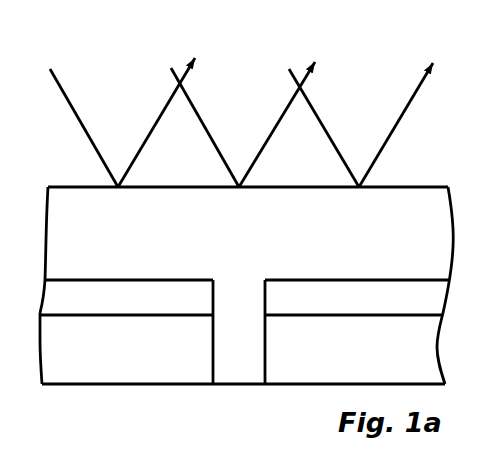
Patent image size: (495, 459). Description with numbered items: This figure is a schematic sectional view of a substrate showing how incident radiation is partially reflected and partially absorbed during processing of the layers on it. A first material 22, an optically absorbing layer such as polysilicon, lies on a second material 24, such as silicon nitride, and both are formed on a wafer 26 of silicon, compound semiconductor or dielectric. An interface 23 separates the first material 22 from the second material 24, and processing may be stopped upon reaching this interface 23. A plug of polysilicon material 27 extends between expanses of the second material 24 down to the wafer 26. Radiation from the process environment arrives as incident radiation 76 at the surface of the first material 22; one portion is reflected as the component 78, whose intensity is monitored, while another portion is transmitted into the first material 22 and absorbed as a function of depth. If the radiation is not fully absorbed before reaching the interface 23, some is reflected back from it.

The first material 22 is at (393, 250).
The interface 23 is at (98, 278).
The second material 24 is at (393, 310).
The wafer 26 is at (389, 366).
The plugs of polysilicon material 27 is at (252, 358).
The incident radiation 76 is at (85, 132).
The reflected component 78 is at (145, 143).